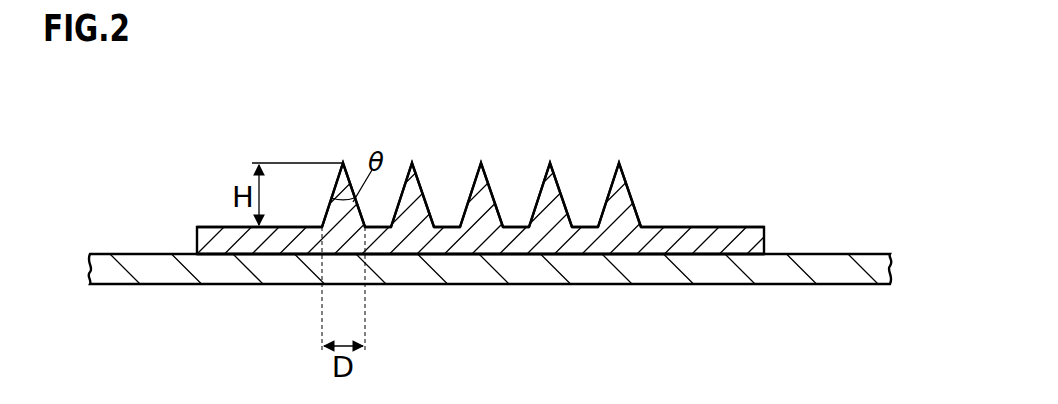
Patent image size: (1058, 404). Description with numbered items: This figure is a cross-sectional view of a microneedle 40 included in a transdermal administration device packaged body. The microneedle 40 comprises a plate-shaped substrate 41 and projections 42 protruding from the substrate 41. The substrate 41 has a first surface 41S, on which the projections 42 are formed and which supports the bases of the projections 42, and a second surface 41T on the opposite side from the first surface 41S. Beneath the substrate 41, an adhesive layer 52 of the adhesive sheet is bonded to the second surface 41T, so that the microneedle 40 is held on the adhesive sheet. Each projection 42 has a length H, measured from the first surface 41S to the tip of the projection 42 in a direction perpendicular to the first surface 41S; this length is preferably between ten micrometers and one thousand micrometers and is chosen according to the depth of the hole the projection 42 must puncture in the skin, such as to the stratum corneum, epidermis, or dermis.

The microneedle 40 is at (518, 192).
The substrate 41 is at (764, 240).
The first surface 41S is at (727, 227).
The second surface 41T is at (710, 254).
The projection 42 is at (490, 178).
The adhesive layer 52 is at (890, 263).